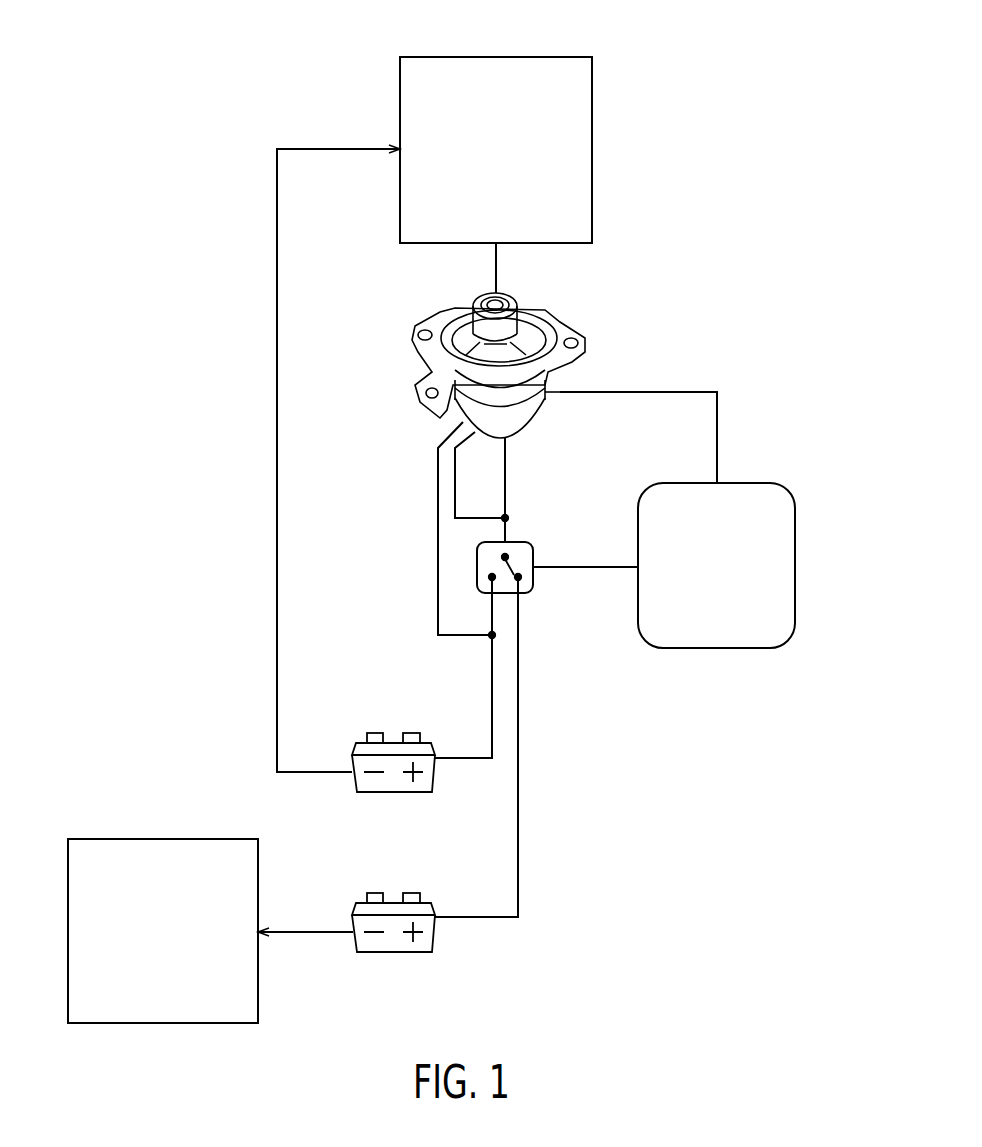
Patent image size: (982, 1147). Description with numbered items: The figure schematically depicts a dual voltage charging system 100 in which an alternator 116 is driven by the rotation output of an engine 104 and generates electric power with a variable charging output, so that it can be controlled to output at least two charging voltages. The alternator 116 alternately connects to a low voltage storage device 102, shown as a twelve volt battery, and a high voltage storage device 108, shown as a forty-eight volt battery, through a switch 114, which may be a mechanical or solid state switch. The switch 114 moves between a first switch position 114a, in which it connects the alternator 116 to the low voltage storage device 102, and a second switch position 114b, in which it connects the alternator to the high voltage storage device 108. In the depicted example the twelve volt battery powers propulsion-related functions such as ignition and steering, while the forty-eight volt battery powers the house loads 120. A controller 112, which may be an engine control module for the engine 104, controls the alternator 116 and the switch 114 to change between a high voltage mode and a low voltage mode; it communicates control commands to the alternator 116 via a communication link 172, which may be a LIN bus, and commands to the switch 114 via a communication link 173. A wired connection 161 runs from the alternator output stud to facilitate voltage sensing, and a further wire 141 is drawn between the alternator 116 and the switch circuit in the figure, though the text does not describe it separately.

The dual voltage charging system 100 is at (683, 50).
The engine 104 is at (592, 152).
The alternator 116 is at (541, 313).
The communication link 172 is at (716, 430).
The controller 112 is at (740, 483).
The communication link 173 is at (592, 567).
The switch 114 is at (533, 545).
The first switch position 114a is at (490, 581).
The second switch position 114b is at (519, 581).
The wired connection 161 is at (455, 500).
The wire 141 is at (437, 520).
The low voltage storage device 102 is at (413, 733).
The high voltage storage device 108 is at (415, 892).
The house loads 120 is at (163, 838).